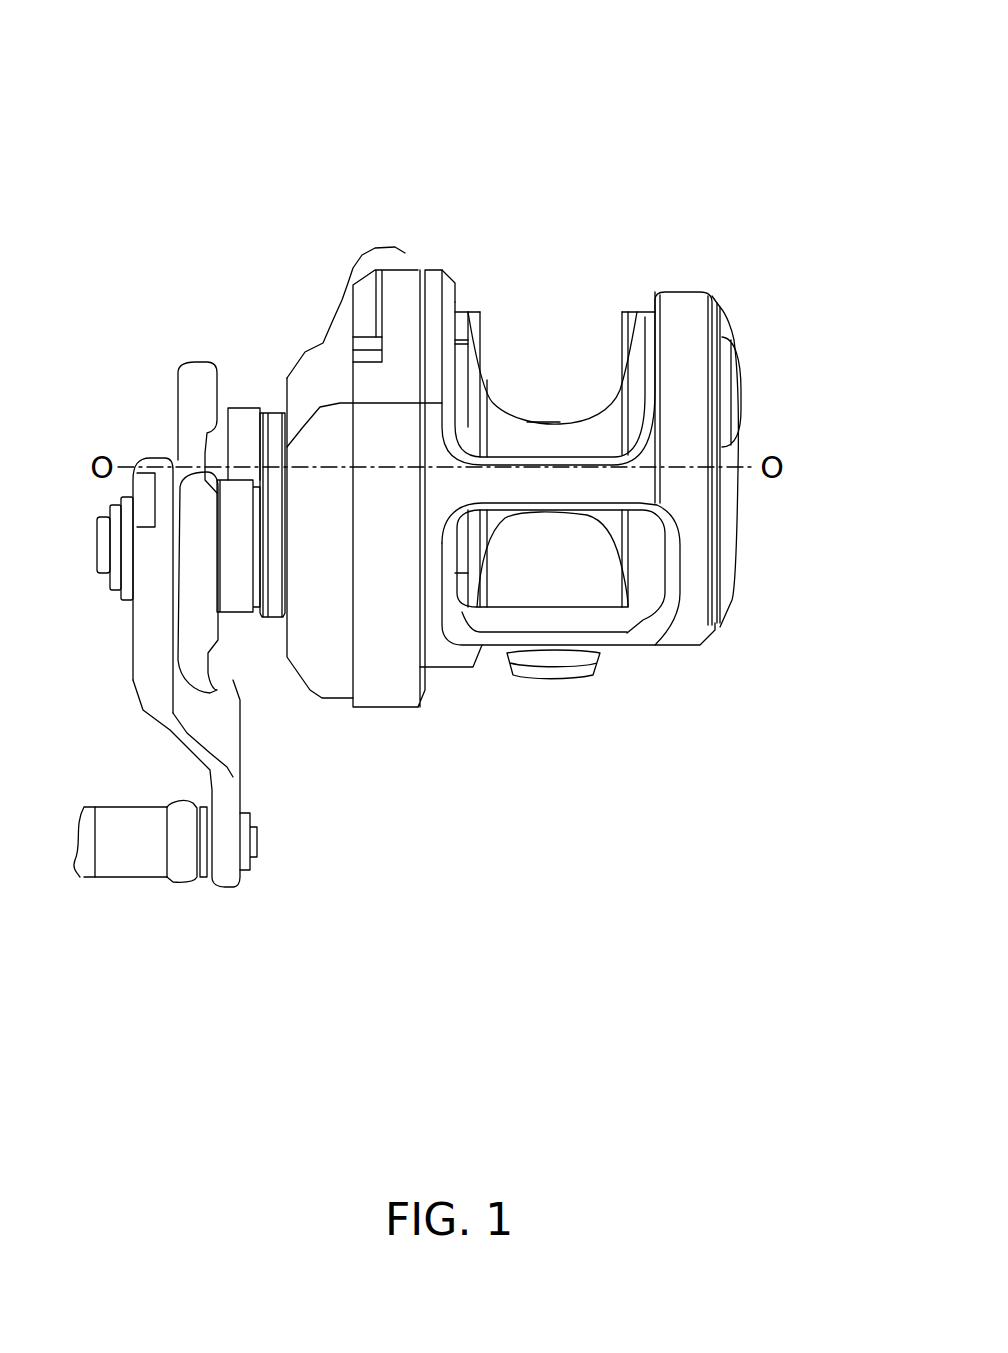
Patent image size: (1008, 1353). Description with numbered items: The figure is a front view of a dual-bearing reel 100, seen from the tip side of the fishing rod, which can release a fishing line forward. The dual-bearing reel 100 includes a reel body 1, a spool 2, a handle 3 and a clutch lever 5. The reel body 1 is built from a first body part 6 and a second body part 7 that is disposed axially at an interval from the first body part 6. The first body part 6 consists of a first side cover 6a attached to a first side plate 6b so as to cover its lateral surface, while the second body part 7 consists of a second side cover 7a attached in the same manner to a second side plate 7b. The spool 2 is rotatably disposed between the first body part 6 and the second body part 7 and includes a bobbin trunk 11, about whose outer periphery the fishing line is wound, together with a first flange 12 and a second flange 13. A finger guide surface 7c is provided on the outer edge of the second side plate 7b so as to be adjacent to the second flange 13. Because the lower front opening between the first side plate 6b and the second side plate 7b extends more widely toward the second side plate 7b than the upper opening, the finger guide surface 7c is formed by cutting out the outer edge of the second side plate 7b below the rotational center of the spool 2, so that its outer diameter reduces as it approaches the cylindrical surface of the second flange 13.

The dual-bearing reel 100 is at (249, 132).
The reel body 1 is at (290, 332).
The spool 2 is at (577, 520).
The handle 3 is at (133, 877).
The clutch lever 5 is at (347, 252).
The first body part 6 is at (425, 233).
The first side cover 6a is at (393, 262).
The first side plate 6b is at (440, 270).
The second body part 7 is at (728, 267).
The second side cover 7a is at (738, 492).
The second side plate 7b is at (687, 290).
The finger guide surface 7c is at (670, 572).
The bobbin trunk 11 is at (558, 375).
The first flange 12 is at (503, 322).
The second flange 13 is at (623, 322).